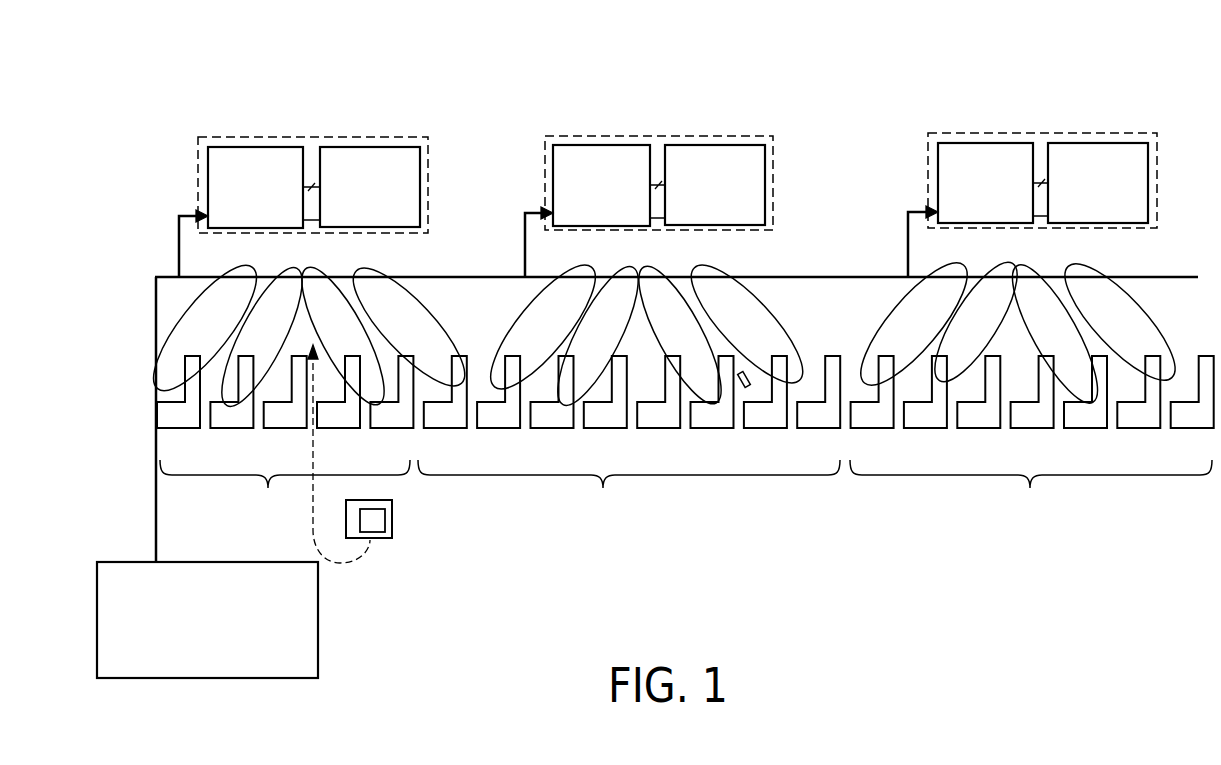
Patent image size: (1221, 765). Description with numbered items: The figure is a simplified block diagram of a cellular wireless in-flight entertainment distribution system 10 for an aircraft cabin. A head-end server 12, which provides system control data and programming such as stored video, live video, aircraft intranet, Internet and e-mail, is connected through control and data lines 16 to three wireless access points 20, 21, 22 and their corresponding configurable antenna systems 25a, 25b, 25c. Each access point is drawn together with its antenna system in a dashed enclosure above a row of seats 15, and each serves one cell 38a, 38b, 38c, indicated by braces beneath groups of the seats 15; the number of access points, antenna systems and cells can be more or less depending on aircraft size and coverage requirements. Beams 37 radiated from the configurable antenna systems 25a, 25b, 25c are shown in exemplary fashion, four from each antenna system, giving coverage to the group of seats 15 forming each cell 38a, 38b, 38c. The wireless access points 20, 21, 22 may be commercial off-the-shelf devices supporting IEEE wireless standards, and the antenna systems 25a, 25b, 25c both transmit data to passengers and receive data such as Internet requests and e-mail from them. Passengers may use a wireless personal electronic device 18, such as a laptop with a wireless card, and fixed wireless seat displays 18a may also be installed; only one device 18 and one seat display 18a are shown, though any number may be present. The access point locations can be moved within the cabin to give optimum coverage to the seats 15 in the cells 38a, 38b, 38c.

The cellular wireless IFE distribution system 10 is at (991, 590).
The head-end server 12 is at (318, 617).
The seats 15 is at (706, 438).
The control and data lines 16 is at (157, 471).
The wireless personal electronic device 18 is at (392, 517).
The fixed wireless seat display 18a is at (745, 388).
The wireless access point 20 is at (257, 147).
The wireless access point 21 is at (602, 145).
The wireless access point 22 is at (983, 143).
The configurable antenna system 25a is at (365, 147).
The configurable antenna system 25b is at (710, 145).
The configurable antenna system 25c is at (1093, 143).
The beams 37 is at (1063, 370).
The cell 38a is at (285, 491).
The cell 38b is at (629, 490).
The cell 38c is at (1031, 490).